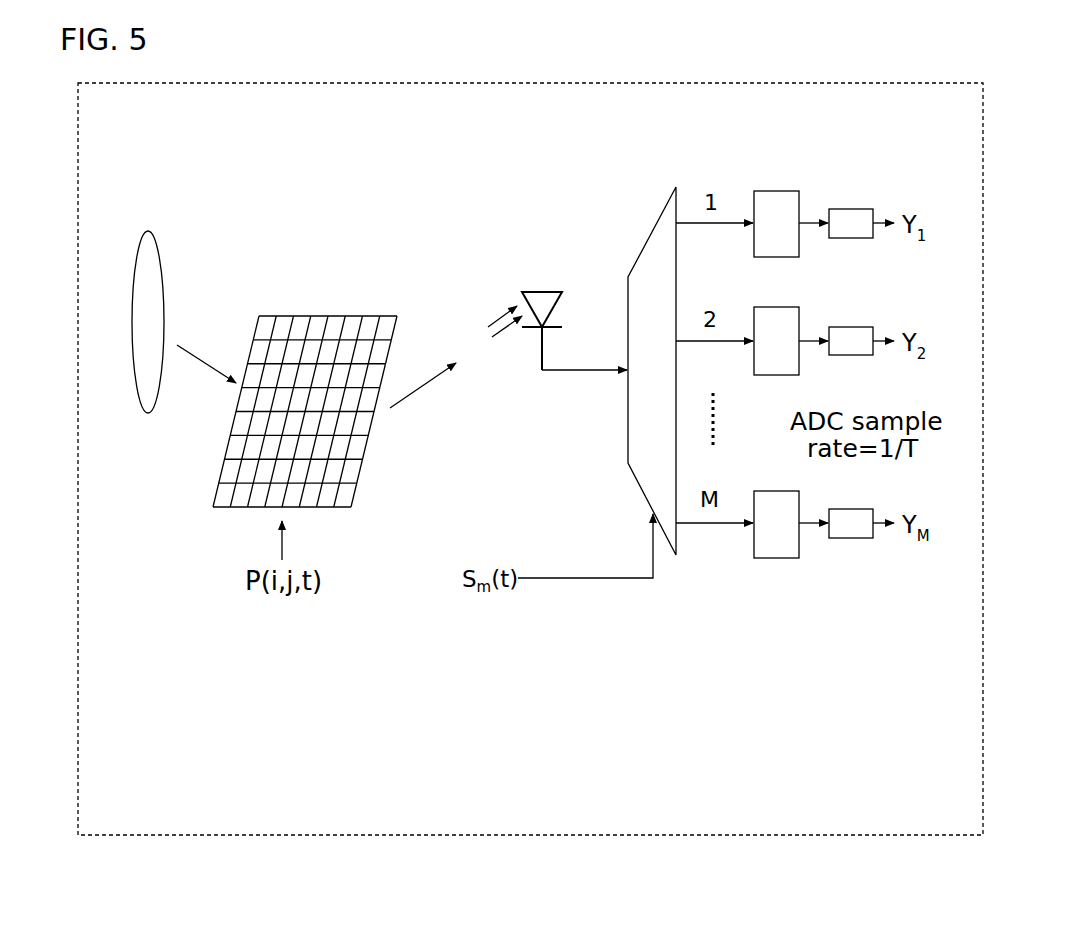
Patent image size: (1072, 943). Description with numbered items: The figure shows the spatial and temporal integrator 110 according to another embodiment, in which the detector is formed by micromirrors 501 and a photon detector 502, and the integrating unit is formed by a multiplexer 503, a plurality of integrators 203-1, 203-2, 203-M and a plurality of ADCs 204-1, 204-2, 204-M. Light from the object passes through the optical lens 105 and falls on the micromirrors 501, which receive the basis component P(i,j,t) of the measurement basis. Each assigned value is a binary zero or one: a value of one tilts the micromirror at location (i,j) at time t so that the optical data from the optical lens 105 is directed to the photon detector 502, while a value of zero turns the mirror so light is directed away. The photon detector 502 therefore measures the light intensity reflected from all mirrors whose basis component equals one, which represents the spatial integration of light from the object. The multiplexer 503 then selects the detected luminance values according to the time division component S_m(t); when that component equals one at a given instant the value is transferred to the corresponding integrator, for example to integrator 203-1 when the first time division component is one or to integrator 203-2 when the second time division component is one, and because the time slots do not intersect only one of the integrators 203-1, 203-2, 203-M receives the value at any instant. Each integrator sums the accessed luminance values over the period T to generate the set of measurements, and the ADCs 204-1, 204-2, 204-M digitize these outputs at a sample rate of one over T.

The spatial and temporal integrator 110 is at (991, 127).
The optical lens 105 is at (145, 310).
The micromirrors 501 is at (305, 369).
The photon detector 502 is at (538, 297).
The multiplexer 503 is at (637, 371).
The integrator 203-1 is at (775, 215).
The integrator 203-2 is at (775, 332).
The integrator 203-M is at (777, 514).
The ADC 204-1 is at (850, 212).
The ADC 204-2 is at (850, 329).
The ADC 204-M is at (852, 508).